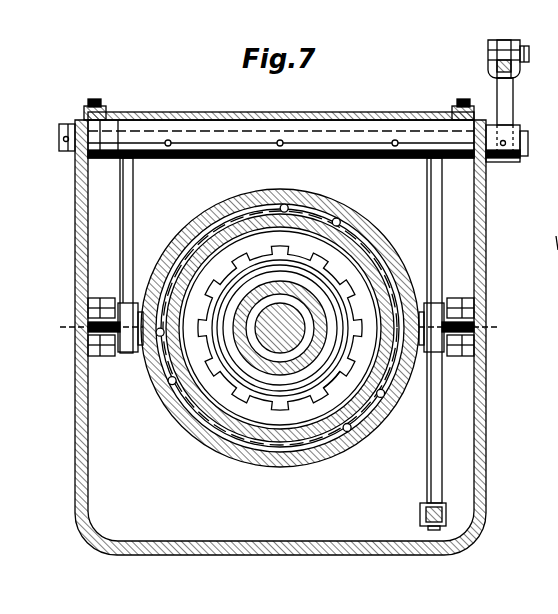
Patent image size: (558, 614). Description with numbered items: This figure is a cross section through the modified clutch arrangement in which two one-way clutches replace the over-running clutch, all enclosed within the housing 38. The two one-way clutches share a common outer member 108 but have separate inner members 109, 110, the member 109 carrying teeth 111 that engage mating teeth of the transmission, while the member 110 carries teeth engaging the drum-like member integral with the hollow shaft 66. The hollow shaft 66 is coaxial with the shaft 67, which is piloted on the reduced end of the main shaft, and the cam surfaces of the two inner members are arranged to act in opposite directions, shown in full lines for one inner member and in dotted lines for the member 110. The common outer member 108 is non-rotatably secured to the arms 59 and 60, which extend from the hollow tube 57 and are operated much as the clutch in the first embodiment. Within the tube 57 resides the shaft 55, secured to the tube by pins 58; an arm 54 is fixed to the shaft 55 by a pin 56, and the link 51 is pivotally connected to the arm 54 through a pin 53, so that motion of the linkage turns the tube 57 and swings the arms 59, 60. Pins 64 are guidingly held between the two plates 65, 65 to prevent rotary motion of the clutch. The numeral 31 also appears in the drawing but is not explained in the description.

The frame 31 is at (556, 240).
The housing 38 is at (76, 437).
The link 51 is at (503, 52).
The pin 53 is at (530, 57).
The arm 54 is at (507, 100).
The shaft 55 is at (524, 141).
The pin 56 is at (505, 147).
The hollow tube 57 is at (341, 140).
The pins 58 is at (280, 140).
The arm 59 is at (434, 209).
The arm 60 is at (128, 226).
The pins 64 is at (88, 330).
The plates 65 is at (108, 299).
The hollow shaft 66 is at (316, 307).
The shaft 67 is at (290, 317).
The common outer member 108 is at (340, 444).
The inner member 109 is at (248, 432).
The inner member 110 is at (278, 448).
The teeth 111 is at (341, 381).